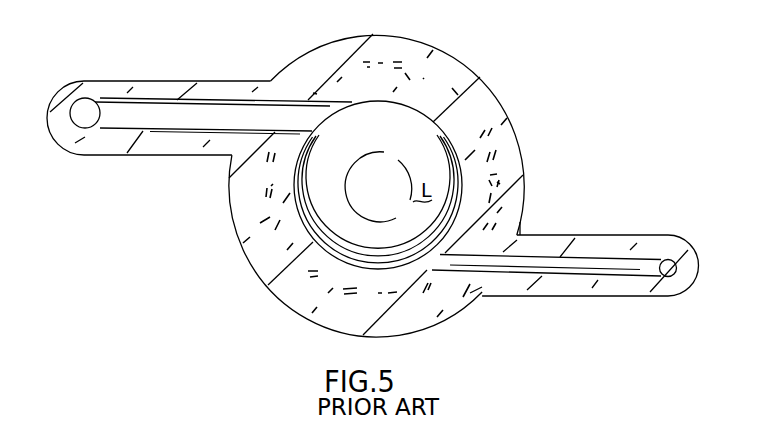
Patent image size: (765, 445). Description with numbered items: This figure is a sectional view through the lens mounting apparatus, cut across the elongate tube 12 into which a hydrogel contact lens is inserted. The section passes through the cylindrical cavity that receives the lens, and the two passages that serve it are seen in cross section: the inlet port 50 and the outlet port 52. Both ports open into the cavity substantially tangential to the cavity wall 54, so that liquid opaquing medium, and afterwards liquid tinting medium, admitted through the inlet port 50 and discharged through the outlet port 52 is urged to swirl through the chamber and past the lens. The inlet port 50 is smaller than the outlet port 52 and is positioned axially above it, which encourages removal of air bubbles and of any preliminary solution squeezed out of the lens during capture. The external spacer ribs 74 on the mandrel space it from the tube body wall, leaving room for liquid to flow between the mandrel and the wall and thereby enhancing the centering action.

The elongate tube 12 is at (315, 50).
The outlet port 52 is at (143, 115).
The inlet port 50 is at (598, 263).
The wall of cylindrical cavity 54 is at (445, 140).
The external spacer ribs 74 is at (268, 190).